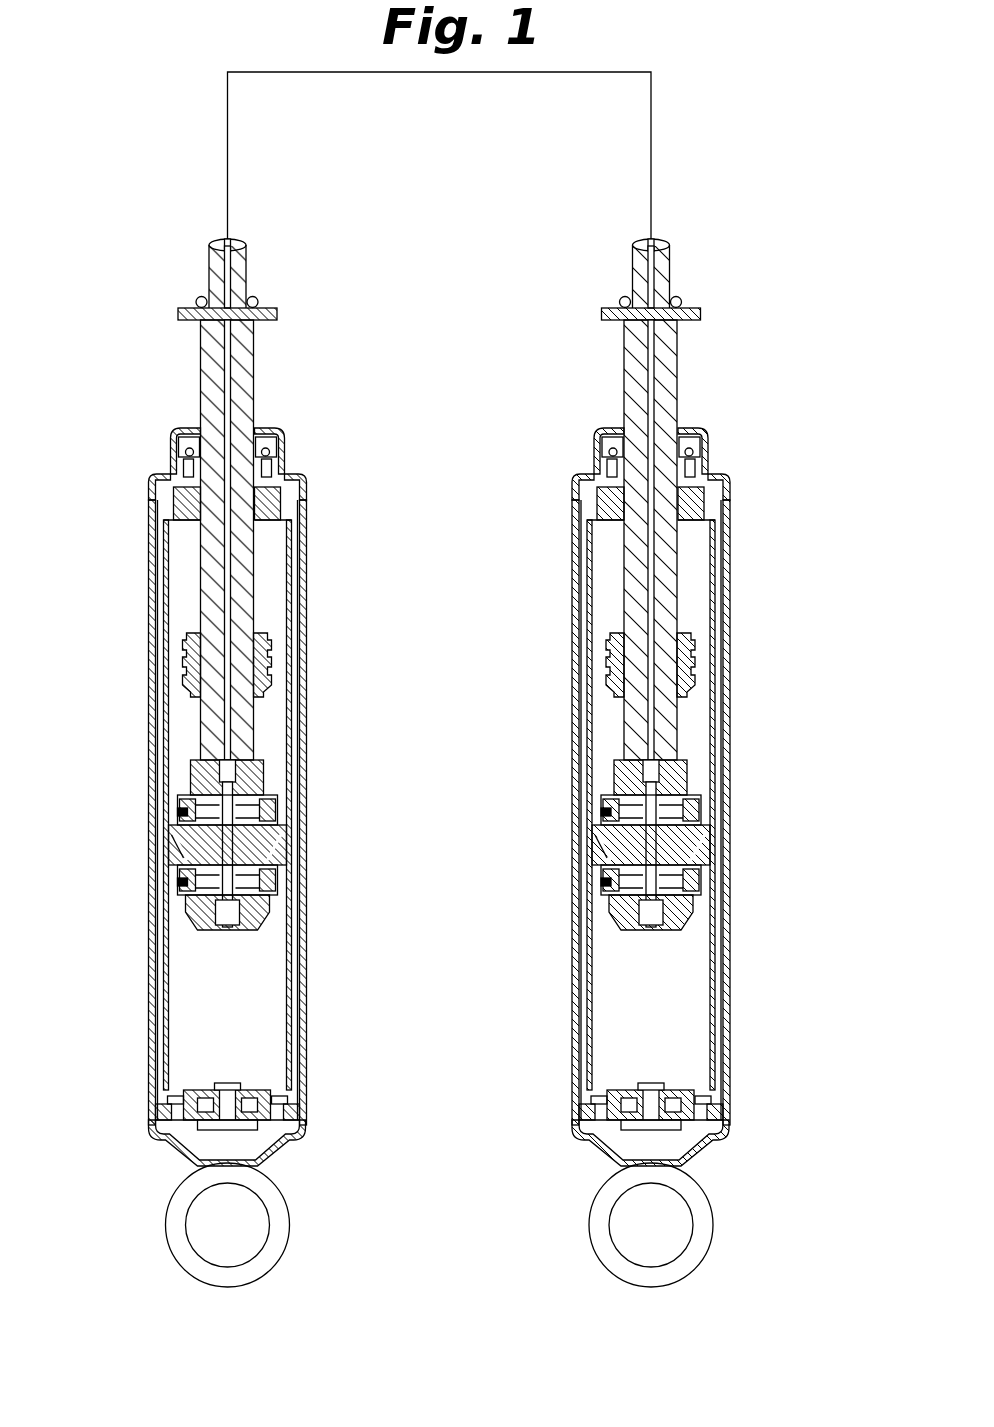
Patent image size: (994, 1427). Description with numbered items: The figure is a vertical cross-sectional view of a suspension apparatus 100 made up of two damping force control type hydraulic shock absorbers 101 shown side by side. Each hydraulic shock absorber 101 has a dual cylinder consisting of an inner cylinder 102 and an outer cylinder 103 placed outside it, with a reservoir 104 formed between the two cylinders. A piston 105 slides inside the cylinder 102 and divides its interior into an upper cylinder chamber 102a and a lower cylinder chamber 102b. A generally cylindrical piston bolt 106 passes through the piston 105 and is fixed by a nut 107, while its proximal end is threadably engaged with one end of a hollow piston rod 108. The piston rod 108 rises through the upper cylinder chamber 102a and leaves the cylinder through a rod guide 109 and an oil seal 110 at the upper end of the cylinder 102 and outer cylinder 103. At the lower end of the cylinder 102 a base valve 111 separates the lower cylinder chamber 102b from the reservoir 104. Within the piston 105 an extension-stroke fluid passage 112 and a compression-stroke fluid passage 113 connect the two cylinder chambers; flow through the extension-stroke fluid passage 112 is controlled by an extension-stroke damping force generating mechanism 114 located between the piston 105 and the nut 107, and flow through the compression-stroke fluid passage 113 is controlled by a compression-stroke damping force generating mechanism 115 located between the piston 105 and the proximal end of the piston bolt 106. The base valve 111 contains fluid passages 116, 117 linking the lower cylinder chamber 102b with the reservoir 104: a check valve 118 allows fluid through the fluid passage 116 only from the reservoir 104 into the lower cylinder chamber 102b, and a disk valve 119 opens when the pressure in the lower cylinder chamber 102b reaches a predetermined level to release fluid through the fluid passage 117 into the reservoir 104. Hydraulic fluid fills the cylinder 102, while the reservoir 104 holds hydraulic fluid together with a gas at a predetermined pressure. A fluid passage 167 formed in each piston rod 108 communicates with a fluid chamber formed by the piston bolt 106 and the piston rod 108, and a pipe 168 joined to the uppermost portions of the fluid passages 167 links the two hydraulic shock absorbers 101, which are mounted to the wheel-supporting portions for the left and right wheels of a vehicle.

The suspension apparatus 100 is at (688, 88).
The hydraulic shock absorber 101 is at (251, 262).
The inner cylinder 102 is at (302, 543).
The upper cylinder chamber 102a is at (268, 625).
The lower cylinder chamber 102b is at (262, 1062).
The outer cylinder 103 is at (306, 585).
The reservoir 104 is at (159, 548).
The piston 105 is at (288, 840).
The piston bolt 106 is at (258, 776).
The nut 107 is at (268, 922).
The piston rod 108 is at (243, 365).
The rod guide 109 is at (297, 492).
The oil seal 110 is at (285, 442).
The base valve 111 is at (272, 1104).
The extension-stroke fluid passage 112 is at (173, 832).
The compression-stroke fluid passage 113 is at (265, 912).
The extension-stroke damping force generating mechanism 114 is at (174, 883).
The compression-stroke damping force generating mechanism 115 is at (275, 813).
The fluid passage 116 is at (181, 1147).
The fluid passage 117 is at (262, 1140).
The check valve 118 is at (183, 1098).
The disk valve 119 is at (274, 1128).
The fluid passage 167 is at (222, 271).
The pipe 168 is at (561, 72).